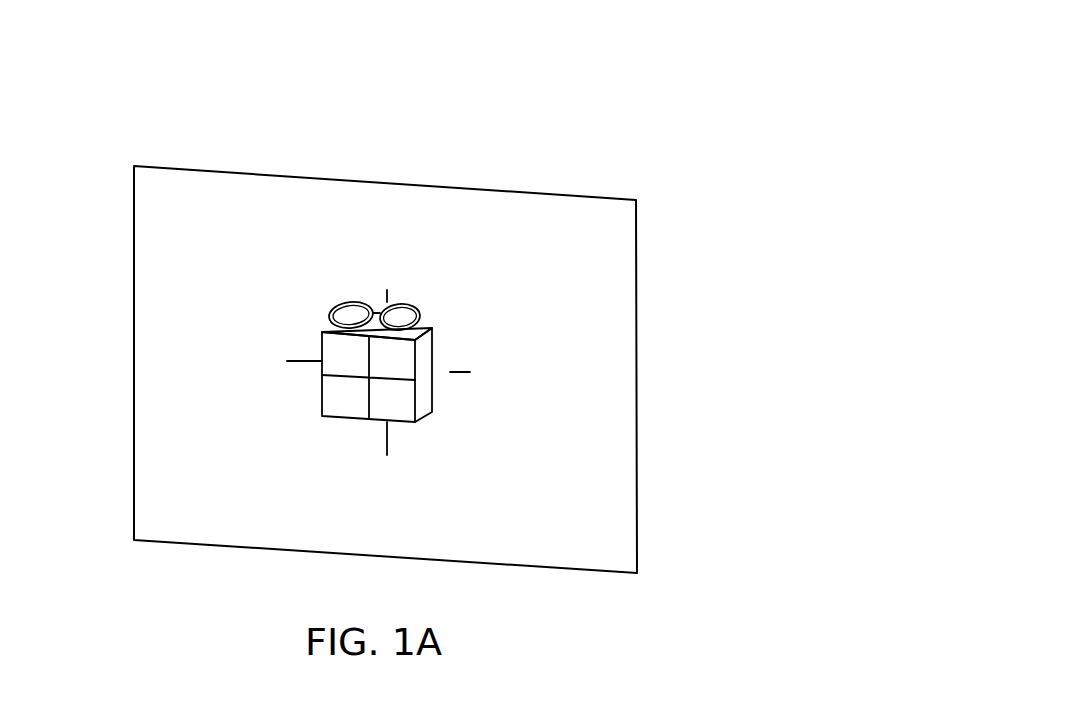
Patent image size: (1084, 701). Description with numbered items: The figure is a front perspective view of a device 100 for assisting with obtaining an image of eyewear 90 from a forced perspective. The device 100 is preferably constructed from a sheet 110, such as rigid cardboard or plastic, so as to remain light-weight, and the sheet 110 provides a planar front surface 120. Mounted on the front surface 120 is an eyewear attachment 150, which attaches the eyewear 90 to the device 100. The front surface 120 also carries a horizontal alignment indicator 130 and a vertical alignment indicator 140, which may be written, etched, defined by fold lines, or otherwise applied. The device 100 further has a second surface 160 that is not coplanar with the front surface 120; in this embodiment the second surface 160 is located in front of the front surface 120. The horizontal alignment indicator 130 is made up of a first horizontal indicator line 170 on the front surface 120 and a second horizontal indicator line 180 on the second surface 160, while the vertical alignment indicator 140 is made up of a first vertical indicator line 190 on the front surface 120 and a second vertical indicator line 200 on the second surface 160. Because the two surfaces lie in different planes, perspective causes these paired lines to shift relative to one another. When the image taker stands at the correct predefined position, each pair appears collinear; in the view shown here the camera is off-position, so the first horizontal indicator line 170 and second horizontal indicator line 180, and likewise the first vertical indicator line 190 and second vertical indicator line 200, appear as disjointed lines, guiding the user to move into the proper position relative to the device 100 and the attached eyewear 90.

The eyewear 90 is at (343, 302).
The device 100 is at (692, 105).
The sheet 110 is at (178, 168).
The front surface 120 is at (253, 193).
The horizontal alignment indicator 130 is at (401, 366).
The vertical alignment indicator 140 is at (506, 359).
The eyewear attachment 150 is at (405, 302).
The second surface 160 is at (400, 401).
The first horizontal indicator line 170 is at (393, 432).
The second horizontal indicator line 180 is at (368, 397).
The first vertical indicator line 190 is at (463, 372).
The second vertical indicator line 200 is at (392, 378).